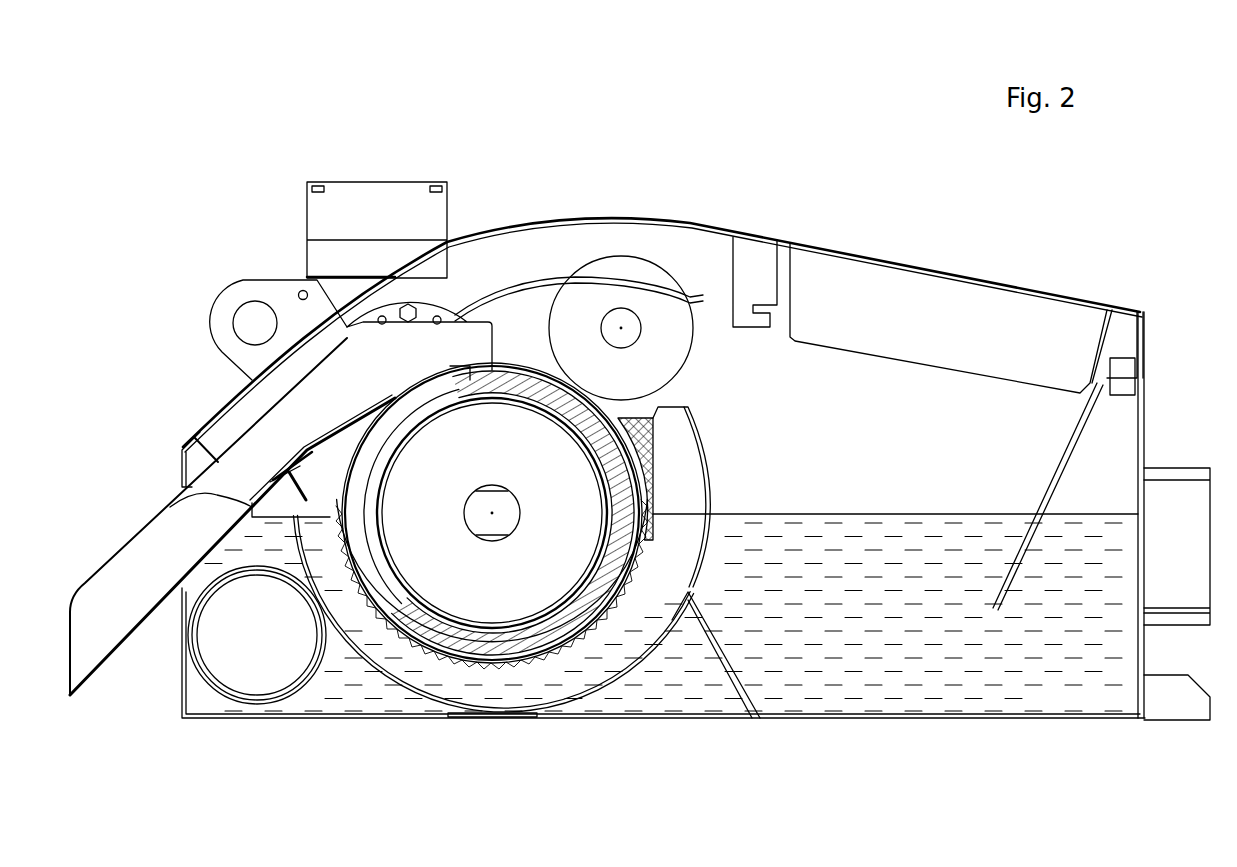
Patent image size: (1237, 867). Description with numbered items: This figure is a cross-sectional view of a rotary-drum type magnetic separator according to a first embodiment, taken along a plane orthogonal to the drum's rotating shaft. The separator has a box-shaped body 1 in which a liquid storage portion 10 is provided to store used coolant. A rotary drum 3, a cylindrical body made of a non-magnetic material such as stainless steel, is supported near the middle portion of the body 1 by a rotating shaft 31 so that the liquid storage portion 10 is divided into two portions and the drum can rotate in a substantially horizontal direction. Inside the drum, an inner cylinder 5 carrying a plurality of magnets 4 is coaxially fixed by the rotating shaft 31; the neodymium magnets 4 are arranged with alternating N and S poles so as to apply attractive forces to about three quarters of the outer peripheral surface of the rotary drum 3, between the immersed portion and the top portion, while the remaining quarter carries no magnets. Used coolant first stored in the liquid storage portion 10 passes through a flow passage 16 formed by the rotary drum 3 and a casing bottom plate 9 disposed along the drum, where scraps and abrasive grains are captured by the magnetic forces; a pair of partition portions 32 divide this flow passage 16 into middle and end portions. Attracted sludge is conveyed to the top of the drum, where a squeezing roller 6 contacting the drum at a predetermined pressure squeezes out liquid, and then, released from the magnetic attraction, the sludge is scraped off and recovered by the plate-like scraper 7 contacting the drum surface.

The body 1 is at (186, 208).
The rotary drum 3 is at (333, 482).
The magnets 4 is at (653, 450).
The inner cylinder 5 is at (497, 398).
The squeezing roller 6 is at (670, 292).
The scraper 7 is at (170, 507).
The casing bottom plate 9 is at (598, 690).
The liquid storage portion 10 is at (1118, 557).
The flow passage 16 is at (415, 678).
The rotating shaft 31 is at (497, 527).
The partition portions 32 is at (634, 430).